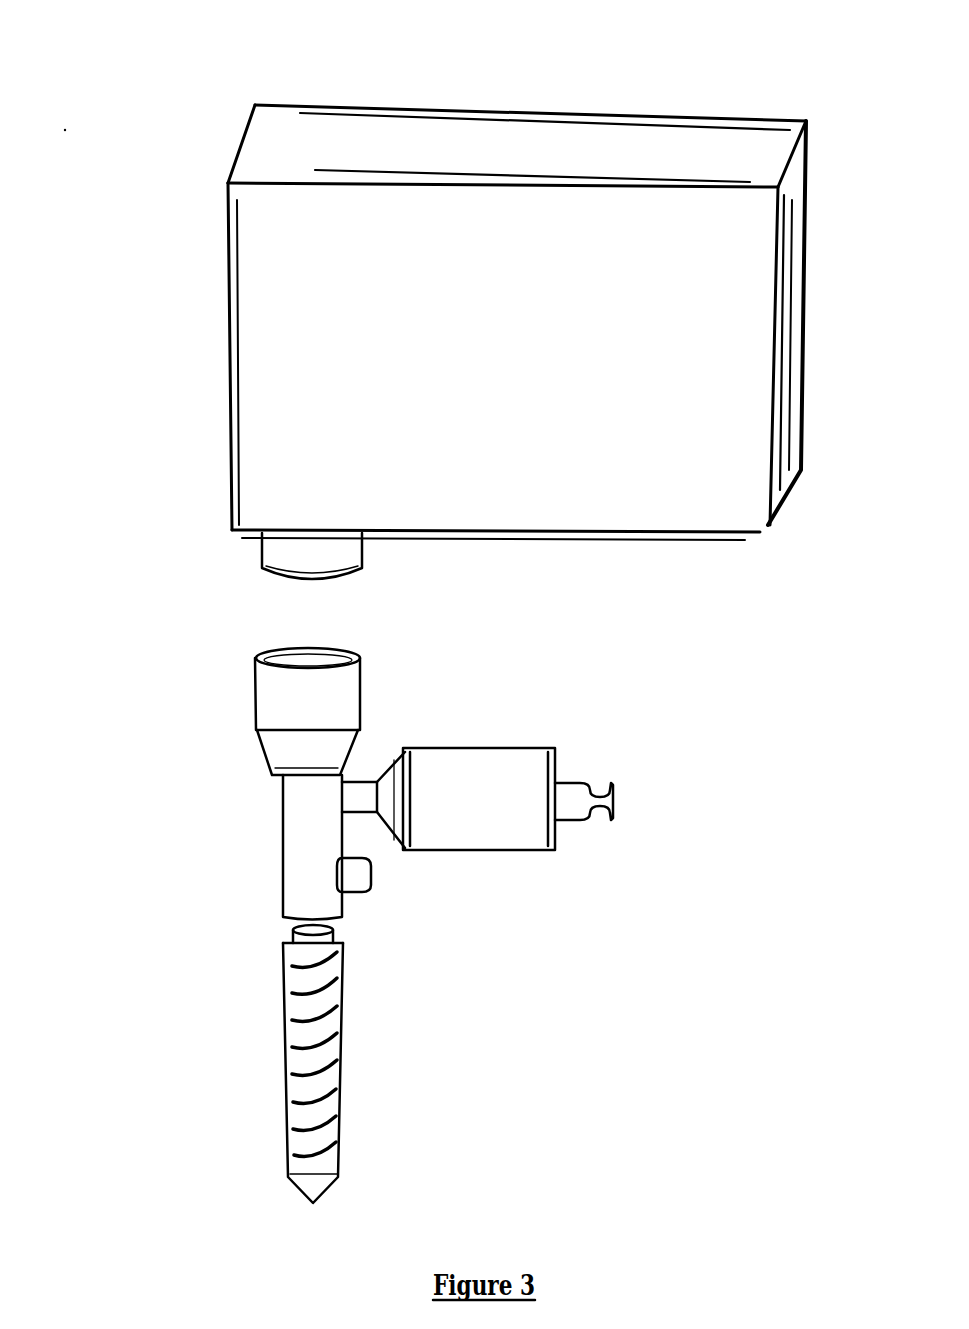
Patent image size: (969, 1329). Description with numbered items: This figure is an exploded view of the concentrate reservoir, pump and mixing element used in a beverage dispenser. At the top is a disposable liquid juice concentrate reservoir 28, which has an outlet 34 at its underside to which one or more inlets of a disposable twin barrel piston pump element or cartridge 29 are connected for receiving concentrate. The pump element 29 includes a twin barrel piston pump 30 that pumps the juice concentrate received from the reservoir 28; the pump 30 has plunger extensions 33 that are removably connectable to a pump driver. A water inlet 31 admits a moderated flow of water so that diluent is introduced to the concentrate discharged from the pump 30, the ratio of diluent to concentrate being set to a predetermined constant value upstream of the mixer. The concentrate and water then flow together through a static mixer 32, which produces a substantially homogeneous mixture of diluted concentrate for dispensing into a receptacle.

The concentrate reservoir 28 is at (752, 143).
The pump element 29 is at (170, 648).
The twin barrel piston pump 30 is at (472, 760).
The water inlet 31 is at (369, 872).
The static mixer 32 is at (343, 1020).
The plunger extensions 33 is at (580, 778).
The outlet 34 is at (258, 563).